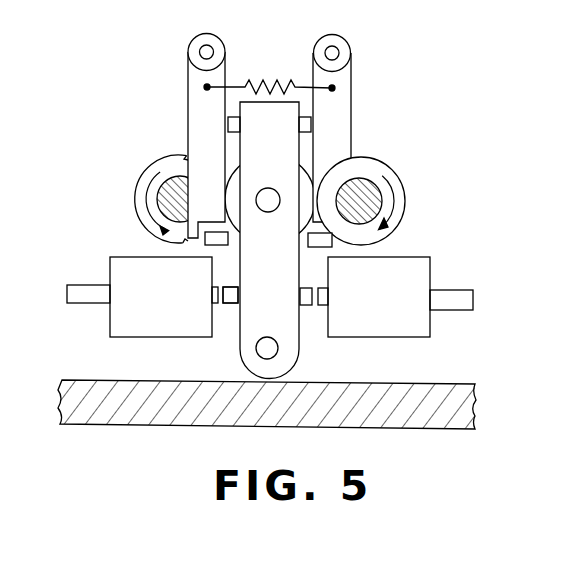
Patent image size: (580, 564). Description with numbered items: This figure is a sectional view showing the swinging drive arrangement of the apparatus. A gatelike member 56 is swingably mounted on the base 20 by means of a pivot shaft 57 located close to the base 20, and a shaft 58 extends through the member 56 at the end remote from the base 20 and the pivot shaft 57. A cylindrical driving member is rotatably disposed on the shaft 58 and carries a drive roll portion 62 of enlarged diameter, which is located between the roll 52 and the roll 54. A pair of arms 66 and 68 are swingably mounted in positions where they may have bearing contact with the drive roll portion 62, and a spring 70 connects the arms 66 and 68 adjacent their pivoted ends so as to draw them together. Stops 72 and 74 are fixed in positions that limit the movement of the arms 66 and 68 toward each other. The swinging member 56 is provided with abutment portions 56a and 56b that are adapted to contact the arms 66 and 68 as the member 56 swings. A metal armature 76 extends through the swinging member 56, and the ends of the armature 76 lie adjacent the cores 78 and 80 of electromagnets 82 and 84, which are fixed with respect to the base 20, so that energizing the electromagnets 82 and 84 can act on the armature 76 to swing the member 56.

The base 20 is at (267, 385).
The roll 52 is at (146, 199).
The roll 54 is at (387, 201).
The gatelike member 56 is at (280, 306).
The abutment portion 56a is at (188, 125).
The abutment portion 56b is at (352, 128).
The pivot shaft 57 is at (272, 351).
The shaft 58 is at (268, 221).
The drive roll portion 62 is at (222, 167).
The arm 66 is at (182, 136).
The arm 68 is at (357, 137).
The spring 70 is at (269, 65).
The stop 72 is at (222, 257).
The stop 74 is at (320, 258).
The metal armature 76 is at (226, 324).
The core 78 is at (88, 313).
The core 80 is at (451, 320).
The electromagnet 82 is at (137, 297).
The electromagnet 84 is at (404, 297).